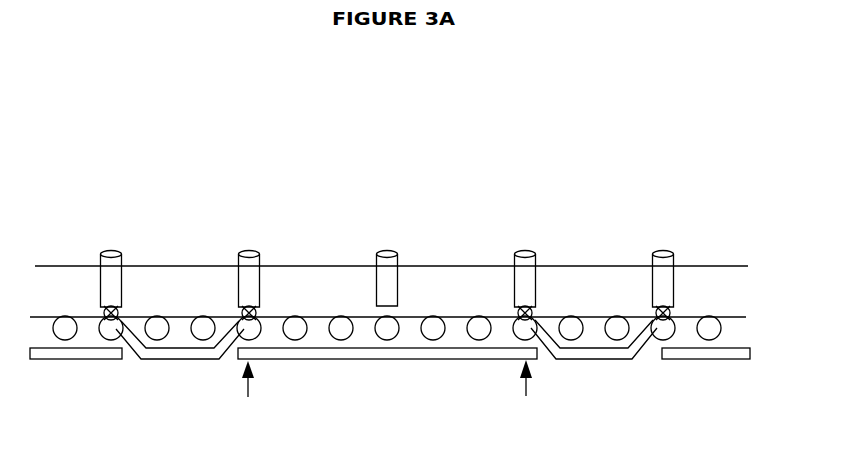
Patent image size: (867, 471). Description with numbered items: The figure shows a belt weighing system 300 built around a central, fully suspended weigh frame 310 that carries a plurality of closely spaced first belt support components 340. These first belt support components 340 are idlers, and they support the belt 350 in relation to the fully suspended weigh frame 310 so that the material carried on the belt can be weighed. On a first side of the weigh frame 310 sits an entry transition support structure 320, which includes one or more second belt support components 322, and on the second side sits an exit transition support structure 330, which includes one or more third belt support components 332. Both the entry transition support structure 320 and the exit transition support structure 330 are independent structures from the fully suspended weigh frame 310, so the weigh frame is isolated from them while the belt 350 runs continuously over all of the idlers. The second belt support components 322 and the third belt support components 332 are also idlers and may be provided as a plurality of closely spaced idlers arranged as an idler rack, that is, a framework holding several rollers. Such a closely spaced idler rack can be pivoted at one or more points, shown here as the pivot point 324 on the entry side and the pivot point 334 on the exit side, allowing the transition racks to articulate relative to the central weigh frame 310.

The belt weighing system 300 is at (326, 109).
The fully suspended weigh frame 310 is at (356, 350).
The entry transition support structure 320 is at (164, 351).
The second belt support components 322 is at (115, 252).
The pivot point 324 is at (256, 316).
The exit transition support structure 330 is at (602, 350).
The third belt support components 332 is at (563, 333).
The pivot point 334 is at (516, 311).
The first belt support components 340 is at (279, 331).
The belt 350 is at (700, 276).